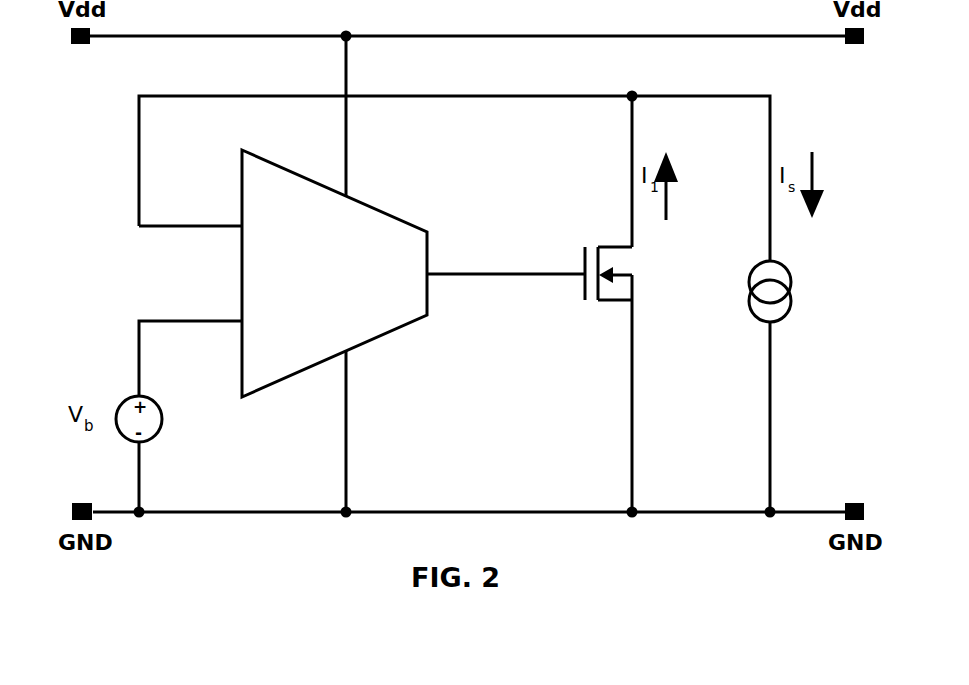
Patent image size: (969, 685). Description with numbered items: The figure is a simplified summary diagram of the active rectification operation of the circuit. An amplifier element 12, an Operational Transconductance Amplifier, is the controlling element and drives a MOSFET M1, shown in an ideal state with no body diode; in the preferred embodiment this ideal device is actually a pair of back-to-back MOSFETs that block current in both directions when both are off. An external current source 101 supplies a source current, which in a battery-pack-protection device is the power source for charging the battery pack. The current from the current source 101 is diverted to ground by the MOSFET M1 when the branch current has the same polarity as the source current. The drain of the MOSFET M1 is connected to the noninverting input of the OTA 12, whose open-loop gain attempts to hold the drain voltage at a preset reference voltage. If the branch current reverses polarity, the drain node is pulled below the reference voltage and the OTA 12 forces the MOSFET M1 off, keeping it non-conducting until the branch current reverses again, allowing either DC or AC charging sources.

The amplifier element 12 is at (348, 285).
The external current source 101 is at (794, 291).
The MOSFET M1 is at (592, 243).